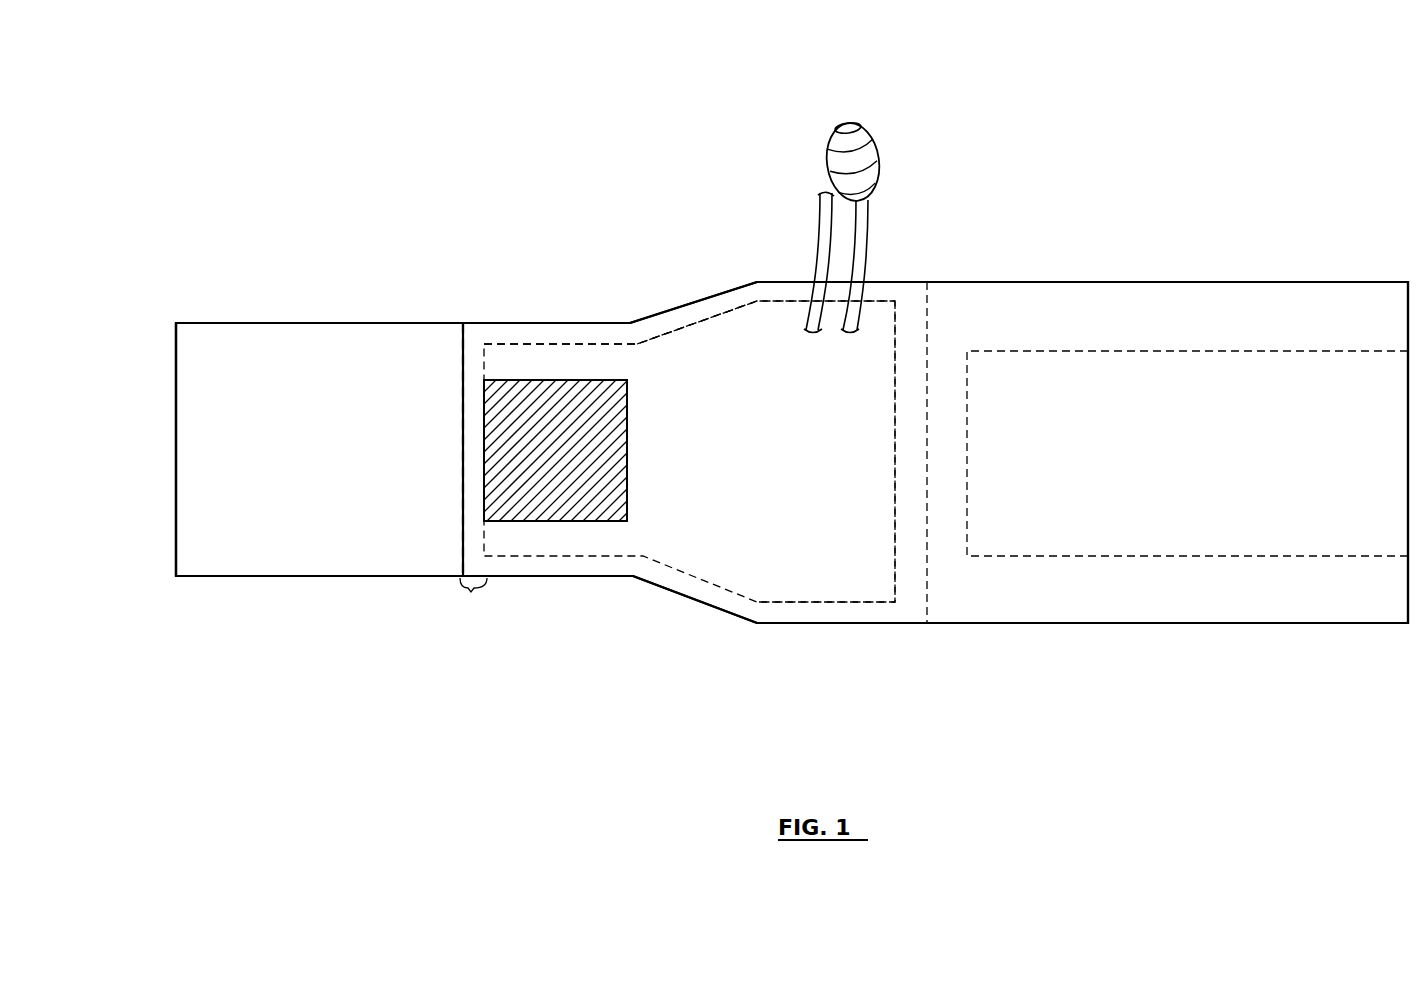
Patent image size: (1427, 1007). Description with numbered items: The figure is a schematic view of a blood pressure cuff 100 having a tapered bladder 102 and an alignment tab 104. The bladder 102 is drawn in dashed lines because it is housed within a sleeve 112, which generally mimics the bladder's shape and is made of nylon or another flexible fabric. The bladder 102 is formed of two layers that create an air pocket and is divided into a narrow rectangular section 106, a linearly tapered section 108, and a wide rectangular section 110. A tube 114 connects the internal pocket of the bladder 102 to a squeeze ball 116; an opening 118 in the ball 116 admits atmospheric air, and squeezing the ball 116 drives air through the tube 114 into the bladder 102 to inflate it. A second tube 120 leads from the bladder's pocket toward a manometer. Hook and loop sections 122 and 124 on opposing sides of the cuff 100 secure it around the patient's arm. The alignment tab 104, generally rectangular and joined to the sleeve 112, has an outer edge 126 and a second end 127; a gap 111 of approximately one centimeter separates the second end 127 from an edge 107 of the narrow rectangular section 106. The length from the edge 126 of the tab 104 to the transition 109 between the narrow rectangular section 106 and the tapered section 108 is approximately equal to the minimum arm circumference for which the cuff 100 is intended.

The blood pressure cuff 100 is at (358, 284).
The bladder 102 is at (822, 579).
The alignment tab 104 is at (292, 539).
The narrow rectangular section 106 is at (514, 543).
The edge 107 is at (481, 343).
The linearly tapered section 108 is at (728, 574).
The transition 109 is at (632, 341).
The wide rectangular section 110 is at (877, 590).
The gap 111 is at (471, 592).
The sleeve 112 is at (907, 596).
The tube 114 is at (872, 226).
The squeeze ball 116 is at (877, 140).
The opening 118 is at (848, 123).
The second tube 120 is at (822, 240).
The hook and loop section 122 is at (573, 498).
The hook and loop section 124 is at (1181, 531).
The edge 126 is at (176, 356).
The second end 127 is at (463, 323).